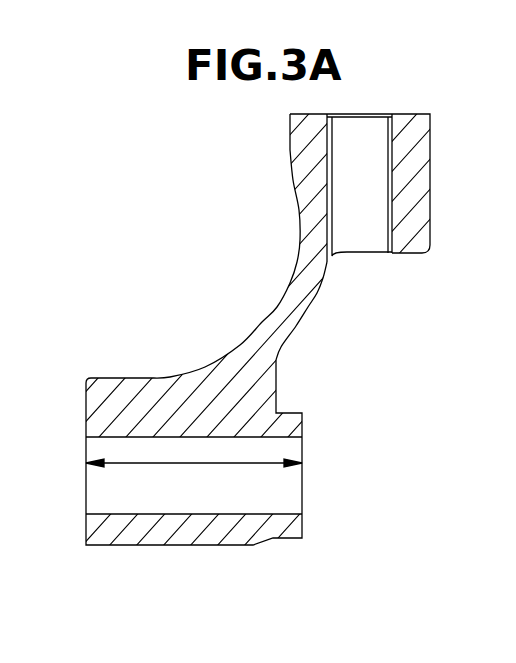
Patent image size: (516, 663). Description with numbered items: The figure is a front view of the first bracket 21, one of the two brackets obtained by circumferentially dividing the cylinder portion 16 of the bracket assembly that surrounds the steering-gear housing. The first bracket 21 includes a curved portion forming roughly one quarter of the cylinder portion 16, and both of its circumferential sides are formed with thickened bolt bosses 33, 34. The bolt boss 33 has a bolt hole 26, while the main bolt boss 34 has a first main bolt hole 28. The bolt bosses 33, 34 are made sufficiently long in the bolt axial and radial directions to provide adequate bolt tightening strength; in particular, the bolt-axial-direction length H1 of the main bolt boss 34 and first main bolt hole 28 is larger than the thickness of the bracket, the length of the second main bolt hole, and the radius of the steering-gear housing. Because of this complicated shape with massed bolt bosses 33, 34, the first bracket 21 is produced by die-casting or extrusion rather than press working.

The cylinder portion 16 is at (320, 280).
The first bracket 21 is at (258, 330).
The bolt hole 26 is at (395, 146).
The first main bolt hole 28 is at (207, 515).
The bolt boss 33 is at (418, 200).
The main bolt boss 34 is at (295, 523).
The bolt-axial-direction length H1 is at (207, 463).